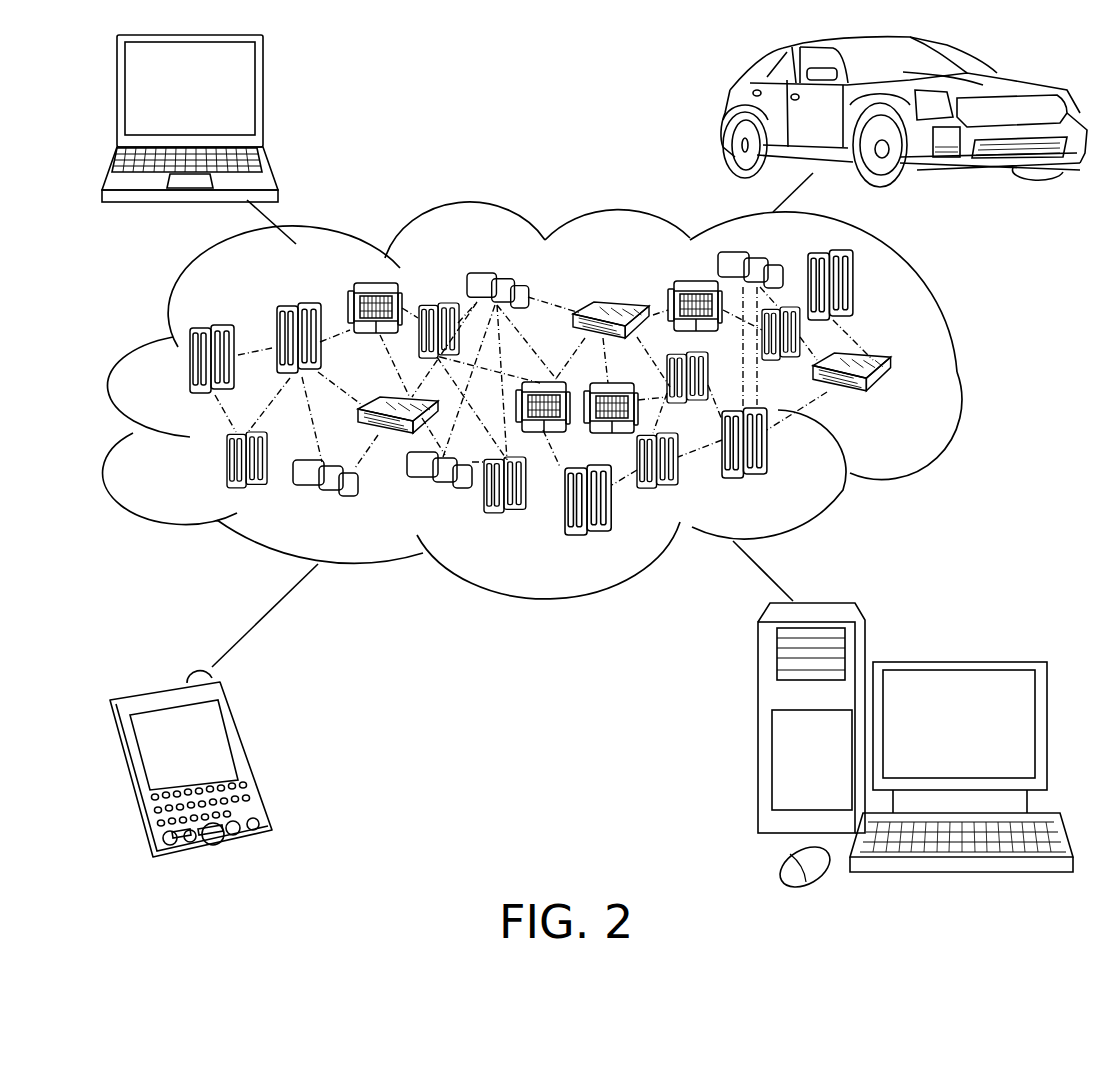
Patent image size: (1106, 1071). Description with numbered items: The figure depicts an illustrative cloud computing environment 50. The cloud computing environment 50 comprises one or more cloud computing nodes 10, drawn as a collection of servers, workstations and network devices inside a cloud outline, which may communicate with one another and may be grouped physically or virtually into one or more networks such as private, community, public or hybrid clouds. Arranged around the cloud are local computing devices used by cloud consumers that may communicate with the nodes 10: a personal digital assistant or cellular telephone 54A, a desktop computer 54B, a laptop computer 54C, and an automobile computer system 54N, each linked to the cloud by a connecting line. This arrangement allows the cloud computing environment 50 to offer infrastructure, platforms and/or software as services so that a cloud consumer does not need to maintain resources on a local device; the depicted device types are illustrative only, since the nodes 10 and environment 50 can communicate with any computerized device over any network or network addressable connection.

The cloud computing node 10 is at (895, 401).
The cloud computing environment 50 is at (957, 373).
The personal digital assistant (PDA) or cellular telephone 54A is at (252, 757).
The desktop computer 54B is at (957, 662).
The laptop computer 54C is at (264, 97).
The automobile computer system 54N is at (726, 118).